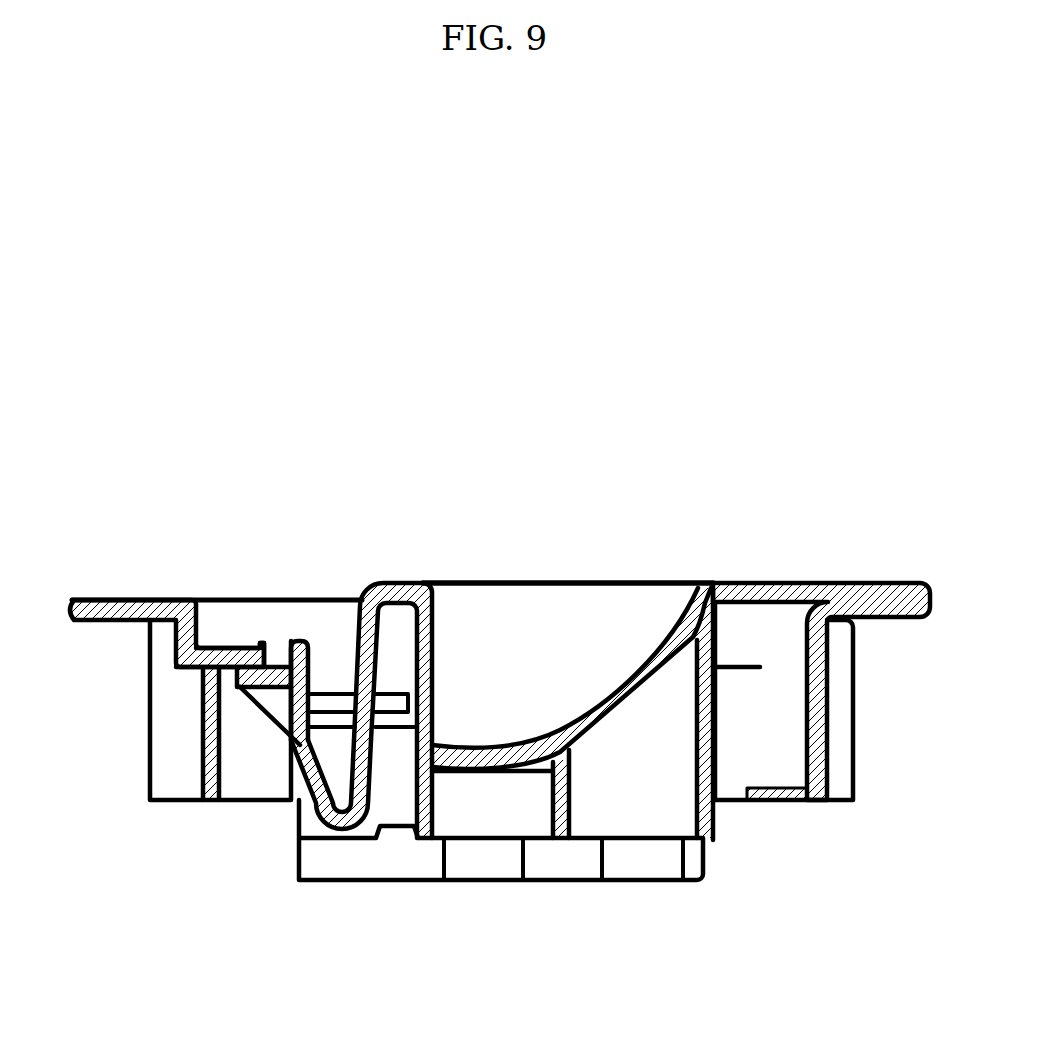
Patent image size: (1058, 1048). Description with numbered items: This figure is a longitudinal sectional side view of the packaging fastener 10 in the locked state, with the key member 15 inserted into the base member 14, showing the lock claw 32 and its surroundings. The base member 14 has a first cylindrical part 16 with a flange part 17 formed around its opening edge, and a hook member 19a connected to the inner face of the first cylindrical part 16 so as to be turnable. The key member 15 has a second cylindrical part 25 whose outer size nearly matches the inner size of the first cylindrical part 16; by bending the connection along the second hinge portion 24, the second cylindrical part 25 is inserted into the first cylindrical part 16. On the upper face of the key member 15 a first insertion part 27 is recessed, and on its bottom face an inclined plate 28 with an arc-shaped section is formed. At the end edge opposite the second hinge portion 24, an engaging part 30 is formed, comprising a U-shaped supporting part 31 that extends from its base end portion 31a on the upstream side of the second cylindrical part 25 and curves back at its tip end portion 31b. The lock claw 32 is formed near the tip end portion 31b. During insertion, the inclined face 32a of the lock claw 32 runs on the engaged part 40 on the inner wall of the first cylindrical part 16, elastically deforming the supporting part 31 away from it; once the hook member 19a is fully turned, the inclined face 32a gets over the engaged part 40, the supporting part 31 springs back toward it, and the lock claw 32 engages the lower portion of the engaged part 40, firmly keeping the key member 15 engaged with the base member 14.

The packaging fastener 10 is at (663, 505).
The base member 14 is at (137, 750).
The key member 15 is at (490, 810).
The first cylindrical part 16 is at (833, 760).
The flange part 17 is at (115, 598).
The hook member 19a is at (627, 868).
The second hinge portion 24 is at (927, 587).
The second cylindrical part 25 is at (715, 822).
The first insertion part 27 is at (488, 628).
The inclined plate 28 is at (593, 717).
The engaging part 30 is at (329, 660).
The supporting part 31 is at (296, 805).
The base end portion 31a is at (372, 590).
The tip end portion 31b is at (291, 640).
The lock claw 32 is at (203, 678).
The inclined face 32a is at (262, 708).
The engaged part 40 is at (233, 648).